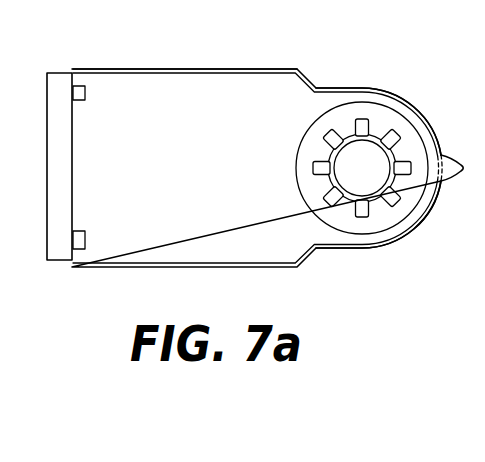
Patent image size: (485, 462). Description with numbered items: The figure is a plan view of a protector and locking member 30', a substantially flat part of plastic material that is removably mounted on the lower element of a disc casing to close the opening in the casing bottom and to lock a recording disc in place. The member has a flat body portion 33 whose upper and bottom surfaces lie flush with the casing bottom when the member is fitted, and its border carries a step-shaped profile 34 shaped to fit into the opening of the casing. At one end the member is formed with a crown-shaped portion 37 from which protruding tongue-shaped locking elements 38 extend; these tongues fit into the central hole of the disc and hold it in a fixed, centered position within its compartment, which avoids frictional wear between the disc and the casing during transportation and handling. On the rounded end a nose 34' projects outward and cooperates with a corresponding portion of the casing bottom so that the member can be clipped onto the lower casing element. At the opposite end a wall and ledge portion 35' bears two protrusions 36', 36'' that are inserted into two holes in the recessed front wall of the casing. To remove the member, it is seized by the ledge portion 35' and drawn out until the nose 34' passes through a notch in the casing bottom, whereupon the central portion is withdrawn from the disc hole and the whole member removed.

The protector and locking member 30' is at (256, 140).
The body portion 33 is at (216, 93).
The step-shaped profile 34 is at (378, 138).
The nose 34' is at (455, 202).
The wall and ledge portion 35' is at (68, 136).
The protrusion 36' is at (120, 101).
The protrusion 36'' is at (122, 236).
The crown-shaped portion 37 is at (375, 205).
The tongue-shaped locking elements 38 is at (393, 140).